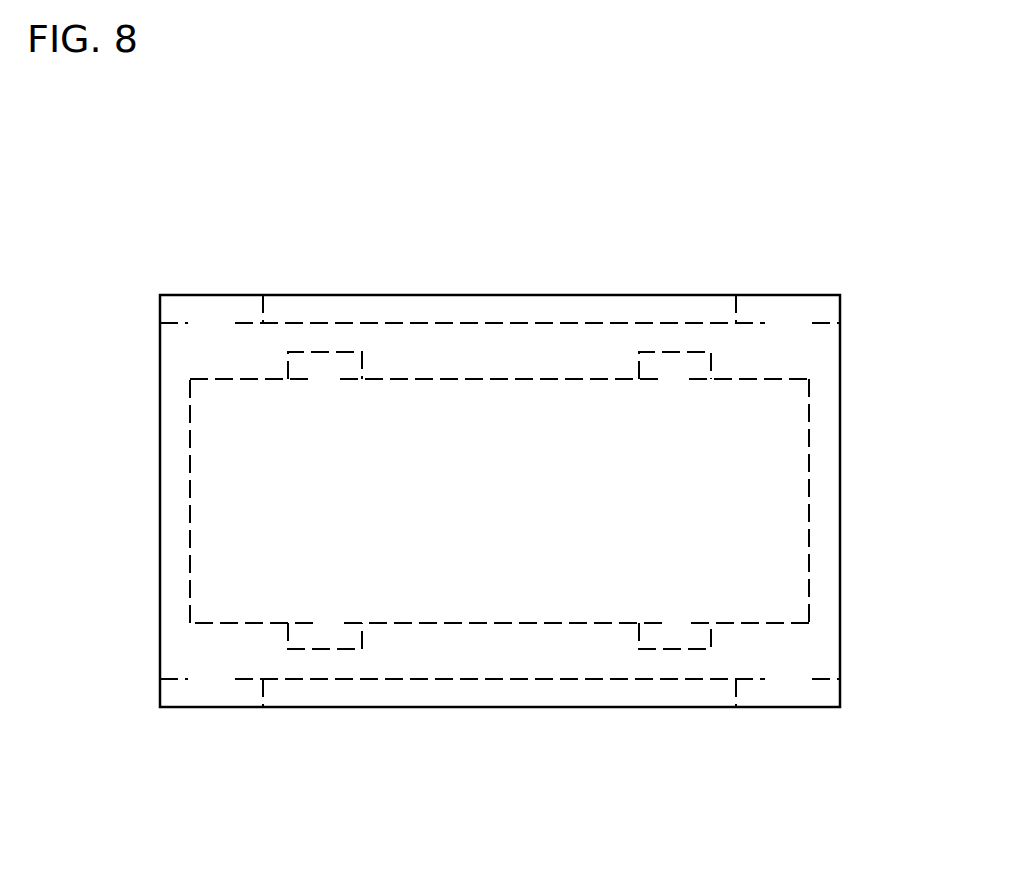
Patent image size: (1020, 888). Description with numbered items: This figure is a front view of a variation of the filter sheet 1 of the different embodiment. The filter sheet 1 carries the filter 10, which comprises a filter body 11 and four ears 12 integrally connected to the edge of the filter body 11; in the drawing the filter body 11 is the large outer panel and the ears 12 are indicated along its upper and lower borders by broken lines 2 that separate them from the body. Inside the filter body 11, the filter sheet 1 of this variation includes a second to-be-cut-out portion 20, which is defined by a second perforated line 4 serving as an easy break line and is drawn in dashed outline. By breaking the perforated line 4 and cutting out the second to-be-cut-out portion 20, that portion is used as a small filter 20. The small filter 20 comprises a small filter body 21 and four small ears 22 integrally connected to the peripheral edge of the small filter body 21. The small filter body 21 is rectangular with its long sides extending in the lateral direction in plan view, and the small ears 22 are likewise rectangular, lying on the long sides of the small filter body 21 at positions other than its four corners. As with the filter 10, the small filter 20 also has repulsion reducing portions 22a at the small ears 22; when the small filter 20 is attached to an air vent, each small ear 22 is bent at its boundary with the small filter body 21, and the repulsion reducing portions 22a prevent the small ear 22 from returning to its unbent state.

The filter sheet 1 is at (747, 273).
The upper wiring pattern 2 is at (435, 323).
The second perforated line 4 is at (438, 624).
The filter 10 is at (810, 358).
The filter body 11 is at (190, 354).
The ears 12 is at (207, 308).
The second to-be-cut-out portion 20 is at (554, 502).
The small filter body 21 is at (752, 523).
The small ears 22 is at (680, 365).
The repulsion reducing portions 22a is at (653, 623).